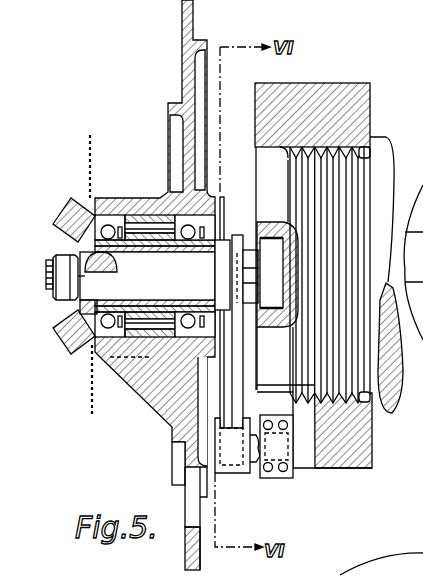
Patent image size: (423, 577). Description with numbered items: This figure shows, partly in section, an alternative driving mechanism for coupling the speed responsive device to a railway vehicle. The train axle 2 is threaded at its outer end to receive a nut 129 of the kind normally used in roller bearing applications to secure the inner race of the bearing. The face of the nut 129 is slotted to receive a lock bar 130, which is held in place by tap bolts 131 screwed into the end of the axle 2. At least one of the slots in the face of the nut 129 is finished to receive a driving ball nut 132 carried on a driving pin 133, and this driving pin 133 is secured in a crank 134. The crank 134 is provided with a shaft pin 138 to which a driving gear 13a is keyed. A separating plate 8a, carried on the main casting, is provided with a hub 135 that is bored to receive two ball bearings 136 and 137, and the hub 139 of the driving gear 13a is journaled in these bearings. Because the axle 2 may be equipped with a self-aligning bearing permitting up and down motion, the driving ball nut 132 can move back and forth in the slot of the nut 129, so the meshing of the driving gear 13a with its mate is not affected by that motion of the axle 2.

The separating plate 8a is at (182, 20).
The driving gear 13a is at (67, 202).
The ball bearing 137 is at (113, 198).
The hub 135 is at (139, 198).
The shaft pin 138 is at (49, 268).
The hub 139 is at (146, 300).
The ball bearing 136 is at (223, 221).
The tap bolt 131 is at (247, 251).
The lock bar 130 is at (276, 222).
The nut 129 is at (349, 82).
The train axle 2 is at (384, 137).
The crank 134 is at (229, 474).
The driving pin 133 is at (253, 463).
The driving ball nut 132 is at (290, 478).